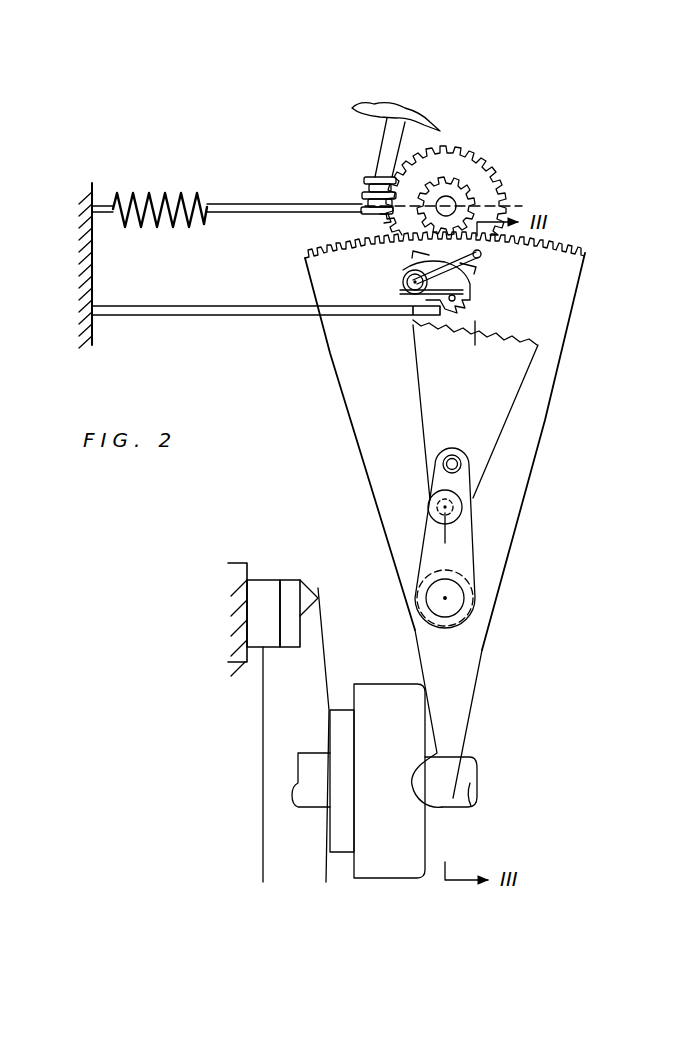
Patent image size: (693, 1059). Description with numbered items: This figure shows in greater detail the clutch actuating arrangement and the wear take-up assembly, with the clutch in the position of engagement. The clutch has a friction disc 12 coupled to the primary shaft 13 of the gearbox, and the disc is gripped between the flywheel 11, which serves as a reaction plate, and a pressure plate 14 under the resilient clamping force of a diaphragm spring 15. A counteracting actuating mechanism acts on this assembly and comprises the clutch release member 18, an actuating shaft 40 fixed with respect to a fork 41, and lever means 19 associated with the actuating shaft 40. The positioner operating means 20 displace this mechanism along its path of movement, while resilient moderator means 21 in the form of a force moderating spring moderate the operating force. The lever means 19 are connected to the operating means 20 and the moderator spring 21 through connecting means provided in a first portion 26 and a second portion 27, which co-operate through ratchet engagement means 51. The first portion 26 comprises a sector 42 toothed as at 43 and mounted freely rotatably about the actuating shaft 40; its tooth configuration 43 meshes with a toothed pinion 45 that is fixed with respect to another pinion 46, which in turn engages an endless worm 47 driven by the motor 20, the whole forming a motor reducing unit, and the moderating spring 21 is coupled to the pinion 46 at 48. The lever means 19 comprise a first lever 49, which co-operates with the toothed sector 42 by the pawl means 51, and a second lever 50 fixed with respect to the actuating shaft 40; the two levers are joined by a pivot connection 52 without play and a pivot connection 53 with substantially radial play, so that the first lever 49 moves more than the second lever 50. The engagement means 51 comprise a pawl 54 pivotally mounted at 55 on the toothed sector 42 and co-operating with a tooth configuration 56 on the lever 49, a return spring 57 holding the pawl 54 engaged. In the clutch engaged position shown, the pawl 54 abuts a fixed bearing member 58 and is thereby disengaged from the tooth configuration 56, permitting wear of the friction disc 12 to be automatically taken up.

The flywheel 11 is at (238, 563).
The friction disc 12 is at (266, 578).
The primary shaft 13 is at (478, 800).
The pressure plate 14 is at (303, 579).
The diaphragm spring 15 is at (329, 655).
The clutch release member 18 is at (386, 692).
The lever means 19 is at (487, 502).
The positioner operating means 20 is at (352, 112).
The resilient moderator means 21 is at (147, 195).
The first portion of connecting means 26 is at (570, 341).
The second portion of connecting means 27 is at (530, 394).
The actuating shaft 40 is at (466, 606).
The fork 41 is at (460, 702).
The toothed sector 42 is at (387, 371).
The tooth configuration 43 is at (588, 250).
The toothed pinion 45 is at (474, 188).
The toothed pinion 46 is at (468, 158).
The endless worm 47 is at (364, 178).
The coupling point 48 is at (482, 204).
The first lever 49 is at (490, 394).
The second lever 50 is at (462, 563).
The ratchet engagement means 51 is at (484, 307).
The pivot connection 52 is at (437, 505).
The pivot connection 53 is at (443, 464).
The pawl 54 is at (478, 279).
The pawl pivot 55 is at (402, 284).
The tooth configuration 56 is at (512, 336).
The return spring 57 is at (407, 275).
The fixed bearing member 58 is at (258, 306).